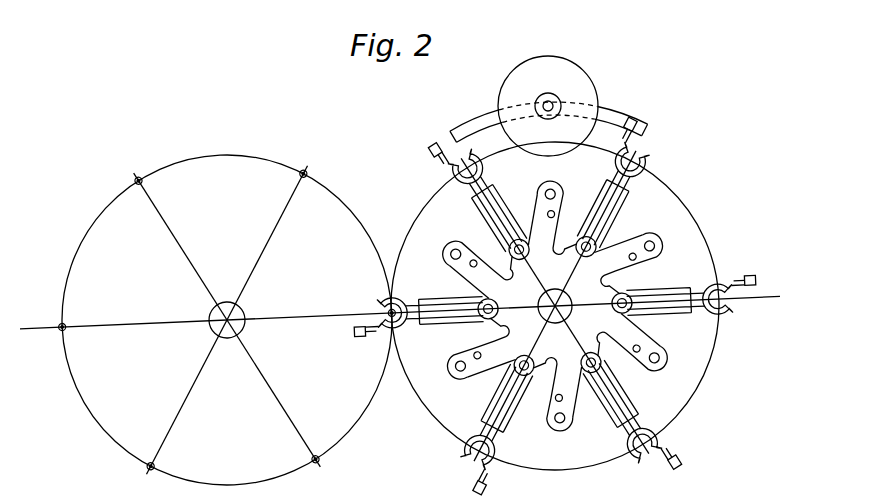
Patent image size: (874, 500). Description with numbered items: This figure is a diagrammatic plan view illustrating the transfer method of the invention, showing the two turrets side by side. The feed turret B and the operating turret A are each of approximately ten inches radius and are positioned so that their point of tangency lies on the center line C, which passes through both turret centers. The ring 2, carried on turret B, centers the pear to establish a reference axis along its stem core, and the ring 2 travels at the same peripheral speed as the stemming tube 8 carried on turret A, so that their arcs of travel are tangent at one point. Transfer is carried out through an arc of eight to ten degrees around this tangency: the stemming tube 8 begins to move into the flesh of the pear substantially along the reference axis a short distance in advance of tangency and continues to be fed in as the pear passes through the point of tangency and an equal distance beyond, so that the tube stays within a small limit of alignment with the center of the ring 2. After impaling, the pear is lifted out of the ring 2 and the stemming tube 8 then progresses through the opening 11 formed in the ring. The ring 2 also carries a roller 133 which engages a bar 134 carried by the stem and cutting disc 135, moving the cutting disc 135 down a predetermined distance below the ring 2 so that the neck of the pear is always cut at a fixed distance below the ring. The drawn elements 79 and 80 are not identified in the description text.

The ring 2 is at (650, 157).
The stemming tube 8 is at (305, 170).
The opening 11 is at (646, 148).
The cam follower lever 79 is at (560, 428).
The lever edge 80 is at (579, 390).
The roller 133 is at (638, 120).
The bar 134 is at (628, 102).
The stem and cutting disc 135 is at (566, 64).
The operating turret A is at (685, 199).
The feed turret B is at (211, 155).
The center line C is at (293, 314).